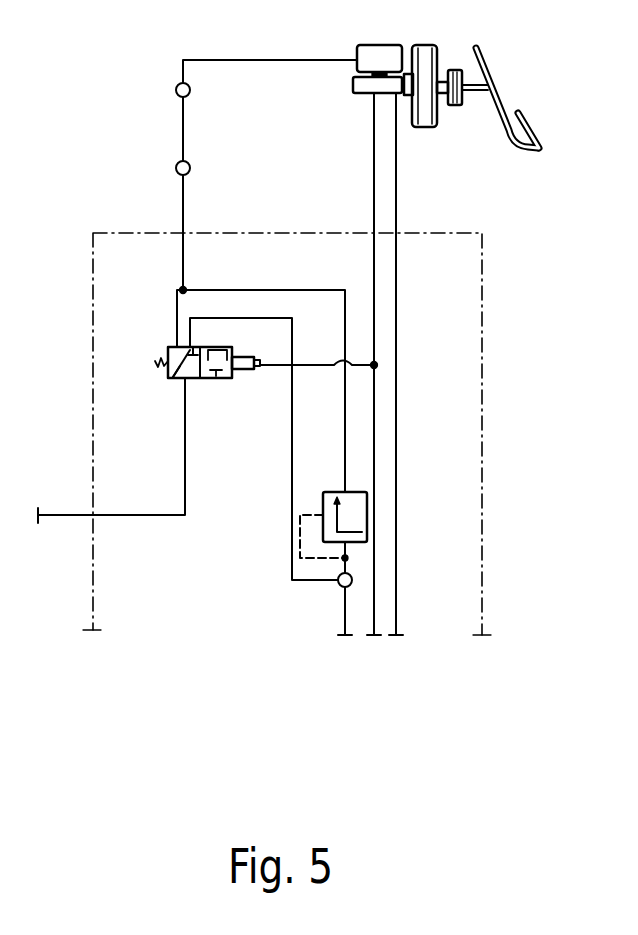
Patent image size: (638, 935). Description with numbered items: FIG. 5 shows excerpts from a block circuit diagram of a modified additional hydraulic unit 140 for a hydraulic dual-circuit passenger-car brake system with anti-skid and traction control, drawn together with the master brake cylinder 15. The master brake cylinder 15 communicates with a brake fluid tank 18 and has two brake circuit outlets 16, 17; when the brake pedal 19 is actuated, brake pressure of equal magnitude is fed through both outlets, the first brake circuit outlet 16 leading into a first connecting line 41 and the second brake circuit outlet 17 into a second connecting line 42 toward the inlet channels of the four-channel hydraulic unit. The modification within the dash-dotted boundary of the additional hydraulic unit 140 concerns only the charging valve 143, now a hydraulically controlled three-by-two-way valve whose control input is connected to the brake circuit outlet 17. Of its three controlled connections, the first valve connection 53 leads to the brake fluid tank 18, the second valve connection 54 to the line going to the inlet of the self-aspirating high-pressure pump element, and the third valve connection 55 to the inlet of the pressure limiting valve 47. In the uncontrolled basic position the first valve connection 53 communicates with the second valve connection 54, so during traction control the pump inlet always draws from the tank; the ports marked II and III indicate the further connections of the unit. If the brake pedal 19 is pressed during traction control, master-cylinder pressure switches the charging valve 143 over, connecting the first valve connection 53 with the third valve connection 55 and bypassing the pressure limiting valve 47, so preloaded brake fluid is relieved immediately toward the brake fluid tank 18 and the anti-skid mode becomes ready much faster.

The master brake cylinder 15 is at (367, 82).
The brake circuit outlet 16 is at (396, 95).
The brake circuit outlet 17 is at (373, 95).
The brake fluid tank 18 is at (370, 57).
The brake pedal 19 is at (503, 113).
The first connecting line 41 is at (396, 310).
The second connecting line 42 is at (374, 295).
The pressure limiting valve 47 is at (323, 492).
The first valve connection 53 is at (177, 345).
The second valve connection 54 is at (180, 377).
The third valve connection 55 is at (193, 347).
The additional hydraulic unit 140 is at (483, 432).
The charging valve 143 is at (205, 378).
The connection II is at (352, 575).
The connection III is at (138, 186).